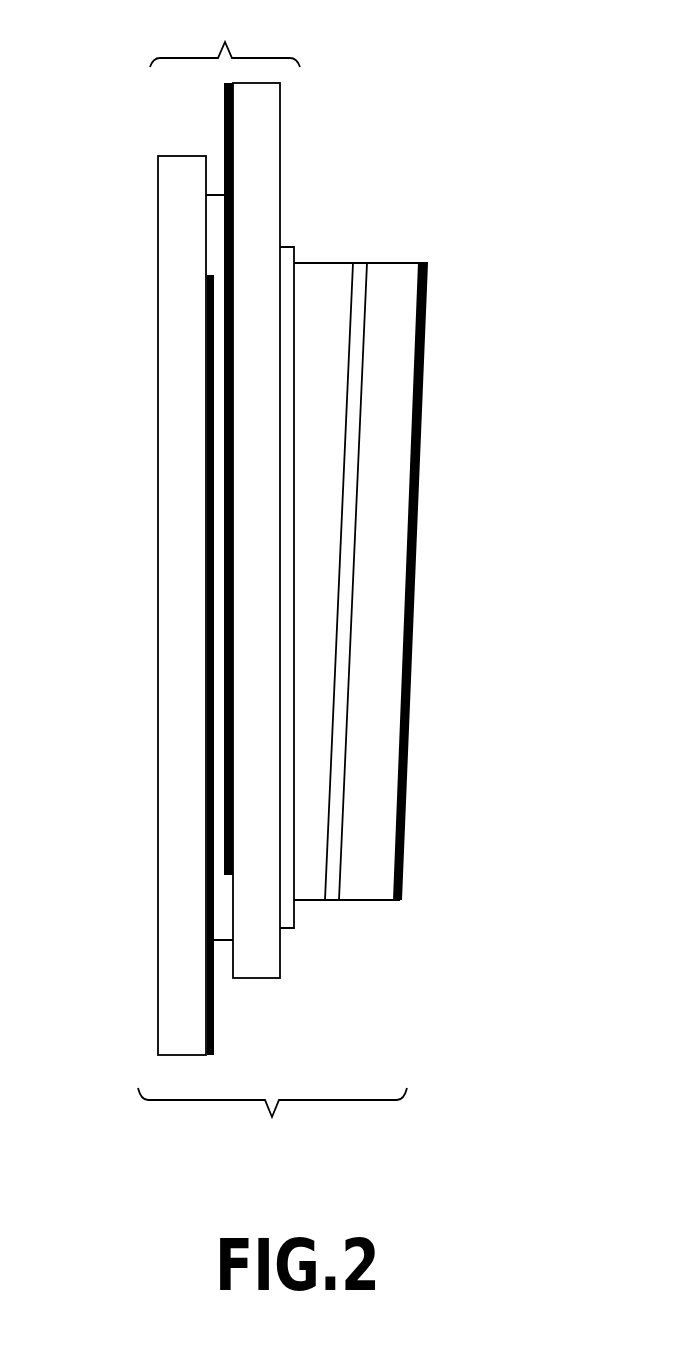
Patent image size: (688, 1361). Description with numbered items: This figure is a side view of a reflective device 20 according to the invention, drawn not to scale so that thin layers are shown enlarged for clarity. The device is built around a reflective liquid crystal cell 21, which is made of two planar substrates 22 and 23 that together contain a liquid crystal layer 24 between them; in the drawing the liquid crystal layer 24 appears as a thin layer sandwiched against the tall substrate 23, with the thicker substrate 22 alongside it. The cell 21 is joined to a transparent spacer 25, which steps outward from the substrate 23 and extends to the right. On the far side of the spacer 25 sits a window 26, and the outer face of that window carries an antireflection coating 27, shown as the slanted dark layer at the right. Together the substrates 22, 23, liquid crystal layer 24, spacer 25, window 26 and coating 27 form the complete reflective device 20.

The reflective device 20 is at (272, 1129).
The reflective liquid crystal cell 21 is at (225, 33).
The planar substrate 22 is at (158, 195).
The planar substrate 23 is at (280, 123).
The liquid crystal layer 24 is at (223, 913).
The transparent spacer 25 is at (340, 263).
The window 26 is at (367, 902).
The antireflection coating 27 is at (428, 300).